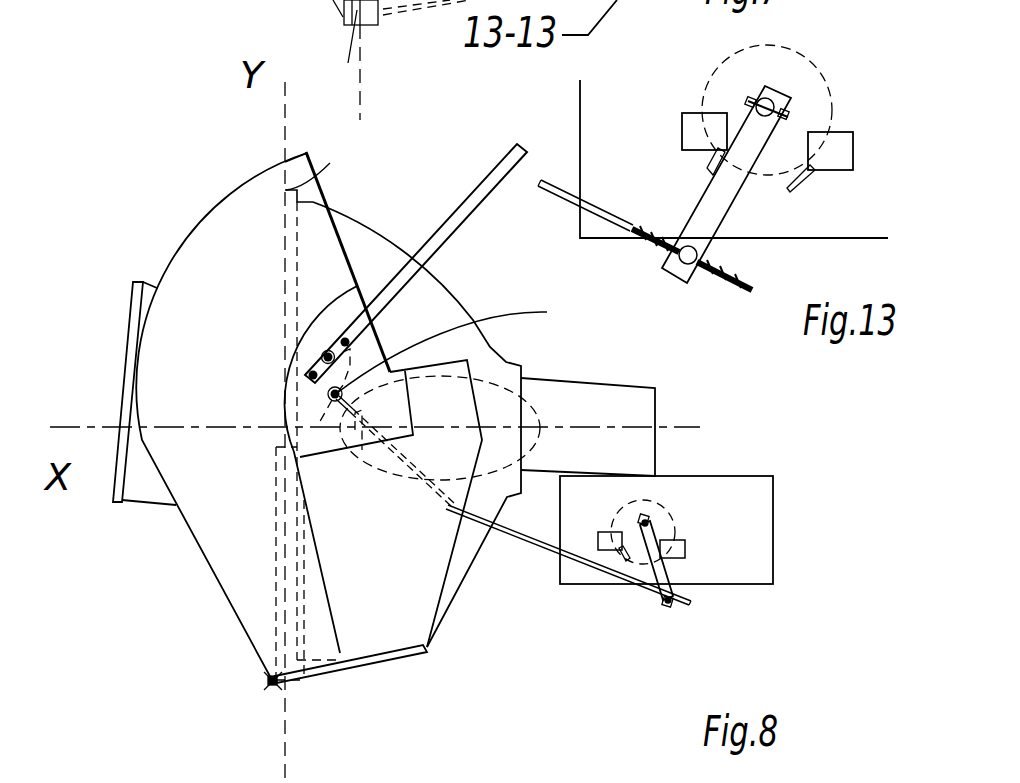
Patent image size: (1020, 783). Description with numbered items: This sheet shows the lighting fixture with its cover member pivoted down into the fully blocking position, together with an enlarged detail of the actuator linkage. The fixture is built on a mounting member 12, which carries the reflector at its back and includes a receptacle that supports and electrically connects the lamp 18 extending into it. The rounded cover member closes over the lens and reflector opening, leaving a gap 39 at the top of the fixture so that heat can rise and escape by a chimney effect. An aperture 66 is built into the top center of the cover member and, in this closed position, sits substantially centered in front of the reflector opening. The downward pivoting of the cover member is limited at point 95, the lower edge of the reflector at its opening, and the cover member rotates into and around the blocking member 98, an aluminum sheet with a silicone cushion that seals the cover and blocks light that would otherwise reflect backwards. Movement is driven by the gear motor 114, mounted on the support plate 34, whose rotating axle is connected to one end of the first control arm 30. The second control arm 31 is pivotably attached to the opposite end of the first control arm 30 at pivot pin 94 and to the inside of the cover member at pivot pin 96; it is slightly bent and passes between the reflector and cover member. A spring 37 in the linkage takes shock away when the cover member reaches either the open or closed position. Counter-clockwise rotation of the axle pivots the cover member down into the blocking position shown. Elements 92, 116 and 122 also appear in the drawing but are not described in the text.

In FIG. 8, the mounting member 12 is at (612, 385).
In FIG. 8, the lamp 18 is at (448, 380).
In FIG. 8, the first control arm 30 is at (683, 537).
In FIG. 13, the first control arm 30 is at (713, 200).
In FIG. 8, the second control arm 31 is at (612, 578).
In FIG. 8, the support plate 34 is at (750, 475).
In FIG. 13, the spring 37 is at (650, 242).
In FIG. 8, the gap 39 is at (310, 173).
In FIG. 8, the aperture 66 is at (137, 282).
In FIG. 8, the upper pivot 92 is at (643, 520).
In FIG. 8, the pivot pin 94 is at (674, 597).
In FIG. 8, the point 95 is at (275, 688).
In FIG. 8, the pivot pin 96 is at (457, 346).
In FIG. 8, the blocking member 98 is at (340, 668).
In FIG. 8, the gear motor 114 is at (673, 512).
In FIG. 13, the gear motor 114 is at (812, 57).
In FIG. 8, the block 116 is at (685, 548).
In FIG. 13, the block 116 is at (853, 137).
In FIG. 8, the block 122 is at (612, 538).
In FIG. 13, the block 122 is at (680, 125).